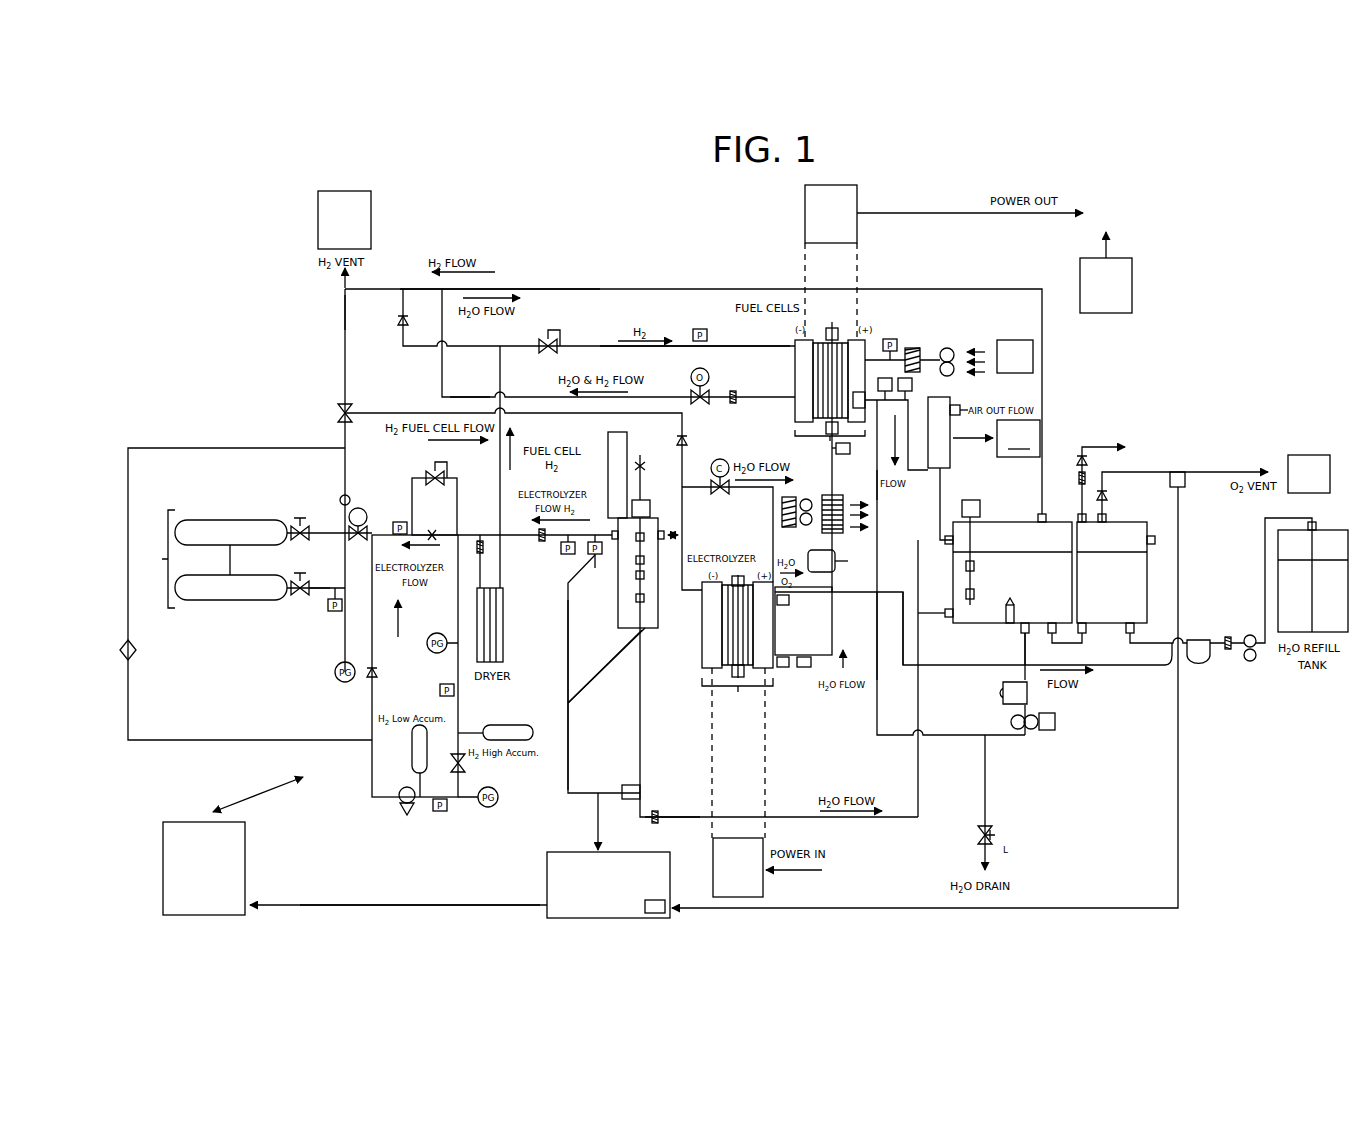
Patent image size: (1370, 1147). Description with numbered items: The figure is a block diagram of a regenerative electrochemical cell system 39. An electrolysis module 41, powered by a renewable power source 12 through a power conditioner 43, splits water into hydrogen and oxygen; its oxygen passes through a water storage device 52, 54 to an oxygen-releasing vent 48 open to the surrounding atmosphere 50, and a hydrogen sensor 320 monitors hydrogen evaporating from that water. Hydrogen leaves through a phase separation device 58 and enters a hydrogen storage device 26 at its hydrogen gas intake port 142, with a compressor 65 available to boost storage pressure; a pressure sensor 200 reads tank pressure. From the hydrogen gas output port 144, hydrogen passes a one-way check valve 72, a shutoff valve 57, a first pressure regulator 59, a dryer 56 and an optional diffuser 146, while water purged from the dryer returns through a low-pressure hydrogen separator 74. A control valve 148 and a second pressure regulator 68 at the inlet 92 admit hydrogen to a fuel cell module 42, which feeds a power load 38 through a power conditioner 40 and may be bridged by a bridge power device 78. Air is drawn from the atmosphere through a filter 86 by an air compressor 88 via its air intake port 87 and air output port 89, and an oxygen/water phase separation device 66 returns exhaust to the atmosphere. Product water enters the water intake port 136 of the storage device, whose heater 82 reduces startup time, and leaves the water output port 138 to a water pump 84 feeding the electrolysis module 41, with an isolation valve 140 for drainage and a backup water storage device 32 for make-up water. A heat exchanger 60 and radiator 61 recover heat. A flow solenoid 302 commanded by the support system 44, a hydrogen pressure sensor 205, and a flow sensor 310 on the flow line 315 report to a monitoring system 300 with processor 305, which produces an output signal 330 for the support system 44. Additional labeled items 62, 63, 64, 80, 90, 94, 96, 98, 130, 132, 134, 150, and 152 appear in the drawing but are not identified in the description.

The renewable power source 12 is at (810, 872).
The hydrogen storage device 26 is at (210, 559).
The backup water storage device 32 is at (1343, 608).
The power load 38 is at (988, 217).
The regenerative electrochemical cell system 39 is at (1184, 210).
The power conditioner 40 is at (831, 262).
The electrolysis module 41 is at (737, 706).
The fuel cell module 42 is at (826, 438).
The power conditioner 43 is at (750, 883).
The support system 44 is at (216, 909).
The oxygen-releasing vent 48 is at (1238, 470).
The surrounding atmosphere 50 is at (824, 342).
The water storage device 52 is at (1055, 601).
The water storage device 54 is at (1115, 601).
The dryer 56 is at (503, 632).
The shutoff valve 57 is at (362, 508).
The phase separation device 58 is at (625, 614).
The first pressure regulator 59 is at (446, 478).
The heat exchanger 60 is at (868, 508).
The radiator 61 is at (882, 490).
The pump 62 is at (842, 563).
The hydrogen vent line 63 is at (343, 310).
The hydrogen tank vent line 64 is at (1078, 480).
The compressor 65 is at (407, 816).
The oxygen/water phase separation device 66 is at (945, 452).
The second pressure regulator 68 is at (551, 336).
The one-way check valve 72 is at (300, 575).
The low-pressure hydrogen separator 74 is at (382, 757).
The bridge power device 78 is at (1106, 272).
The hydrogen supply line 80 is at (537, 288).
The heating system 82 is at (1004, 629).
The water pump 84 is at (1057, 721).
The filter 86 is at (912, 347).
The air intake port 87 is at (955, 368).
The air compressor 88 is at (953, 352).
The air output port 89 is at (943, 350).
The pressure sensor 90 is at (900, 334).
The inlet 92 is at (748, 346).
The water flow line 94 is at (832, 672).
The sensors 96 is at (910, 377).
The electrolyzer water reservoir 98 is at (803, 627).
The valve assembly 130 is at (405, 498).
The water and hydrogen return line 132 is at (504, 397).
The temperature sensor 134 is at (835, 448).
The water intake port 136 is at (942, 620).
The water output port 138 is at (1025, 636).
The isolation valve 140 is at (995, 835).
The hydrogen gas intake port 142 is at (317, 502).
The hydrogen gas output port 144 is at (325, 596).
The diffuser 146 is at (437, 534).
The control valve 148 is at (337, 418).
The air outlet 150 is at (965, 410).
The valve 152 is at (470, 764).
The pressure sensor 200 is at (400, 522).
The hydrogen pressure sensor 205 is at (587, 569).
The monitoring system 300 is at (547, 866).
The flow solenoid 302 is at (650, 632).
The processor 305 is at (645, 910).
The flow sensor 310 is at (622, 785).
The flow line 315 is at (672, 812).
The hydrogen sensor 320 is at (1170, 484).
The output signal 330 is at (283, 907).